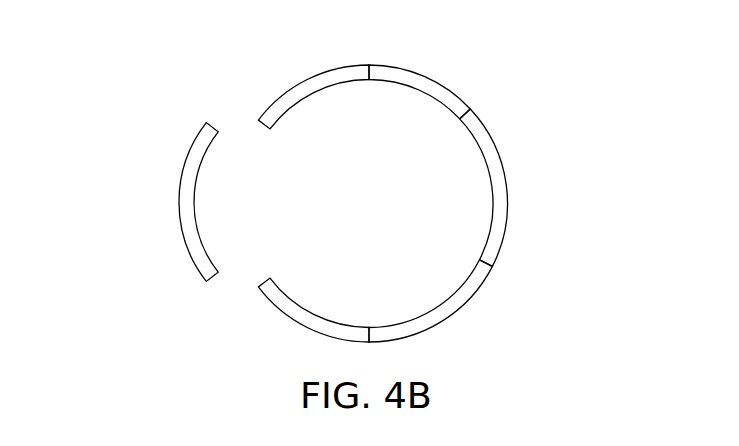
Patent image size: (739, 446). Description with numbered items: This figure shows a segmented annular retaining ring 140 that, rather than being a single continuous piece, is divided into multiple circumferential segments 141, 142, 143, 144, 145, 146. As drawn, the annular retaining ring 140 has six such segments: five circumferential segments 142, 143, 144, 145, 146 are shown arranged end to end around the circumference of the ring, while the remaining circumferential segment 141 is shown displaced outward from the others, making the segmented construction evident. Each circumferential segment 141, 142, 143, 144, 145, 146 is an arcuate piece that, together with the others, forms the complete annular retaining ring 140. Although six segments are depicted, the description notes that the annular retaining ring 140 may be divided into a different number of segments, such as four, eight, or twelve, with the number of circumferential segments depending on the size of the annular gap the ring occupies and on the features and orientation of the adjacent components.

The annular retaining ring 140 is at (112, 70).
The circumferential segment 141 is at (190, 199).
The circumferential segment 142 is at (310, 88).
The circumferential segment 143 is at (406, 77).
The circumferential segment 144 is at (506, 210).
The circumferential segment 145 is at (453, 307).
The circumferential segment 146 is at (300, 313).